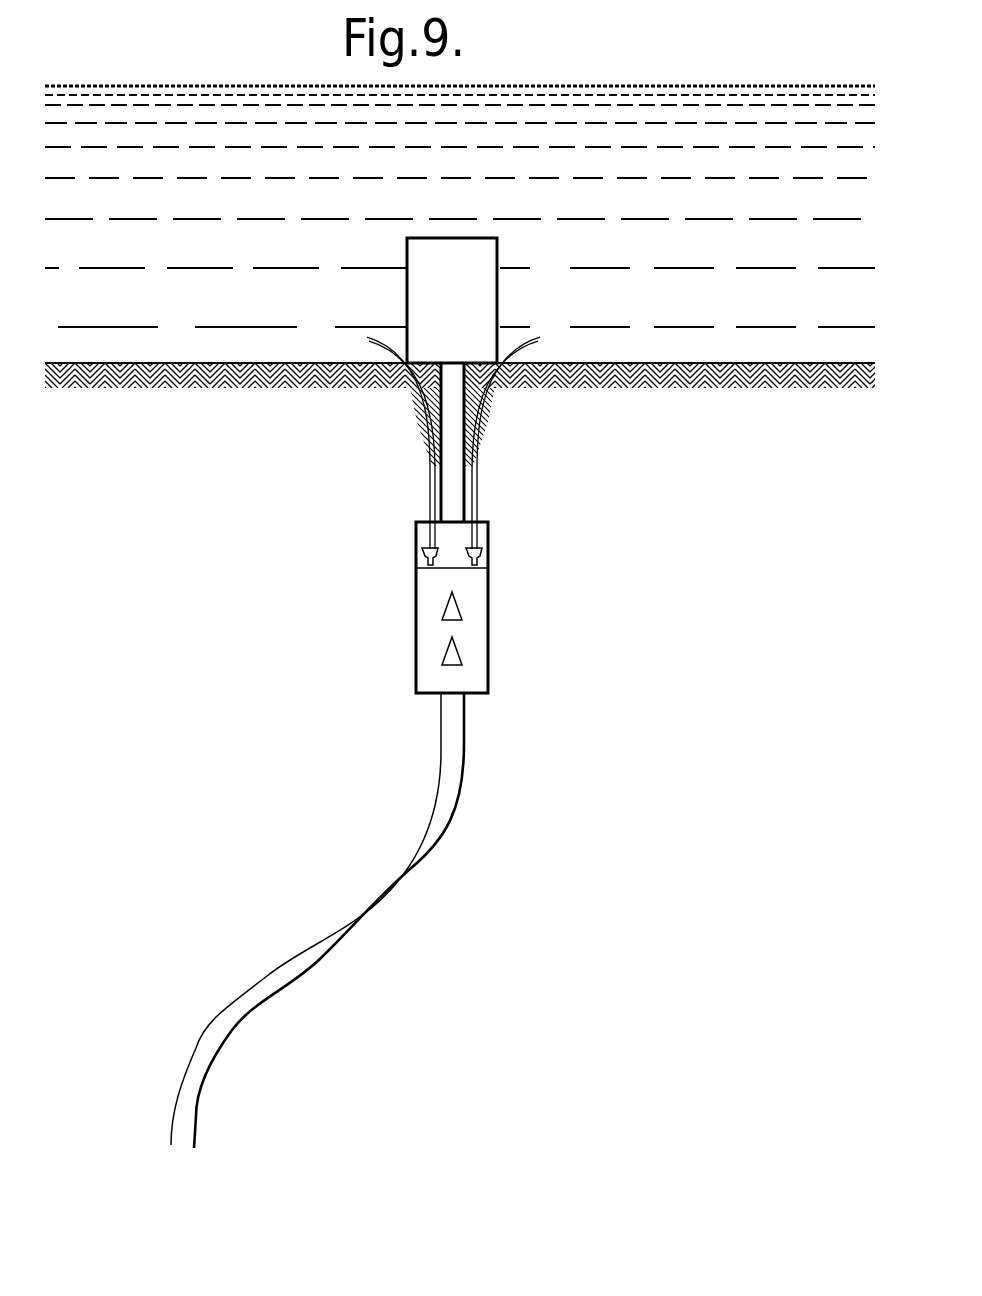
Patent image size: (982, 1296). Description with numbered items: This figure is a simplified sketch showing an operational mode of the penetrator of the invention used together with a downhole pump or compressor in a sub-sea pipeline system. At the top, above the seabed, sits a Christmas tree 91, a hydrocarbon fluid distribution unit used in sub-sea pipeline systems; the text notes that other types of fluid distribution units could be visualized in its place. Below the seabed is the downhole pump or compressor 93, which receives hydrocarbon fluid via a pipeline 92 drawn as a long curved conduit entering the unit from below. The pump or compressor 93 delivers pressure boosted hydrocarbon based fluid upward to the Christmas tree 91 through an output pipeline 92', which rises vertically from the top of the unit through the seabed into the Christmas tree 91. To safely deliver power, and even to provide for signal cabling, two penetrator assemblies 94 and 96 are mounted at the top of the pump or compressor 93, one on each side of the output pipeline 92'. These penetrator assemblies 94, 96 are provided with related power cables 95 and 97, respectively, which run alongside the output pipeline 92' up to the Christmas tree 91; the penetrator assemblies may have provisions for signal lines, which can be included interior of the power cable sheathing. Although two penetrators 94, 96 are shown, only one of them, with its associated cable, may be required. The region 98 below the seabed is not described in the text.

The Christmas tree 91 is at (470, 269).
The pipeline 92 is at (358, 920).
The output pipeline 92' is at (502, 442).
The downhole pump or compressor 93 is at (481, 601).
The penetrator assembly 94 is at (482, 553).
The power cable 95 is at (478, 478).
The penetrator assembly 96 is at (422, 553).
The power cable 97 is at (418, 453).
The seabed / ground 98 is at (546, 1028).